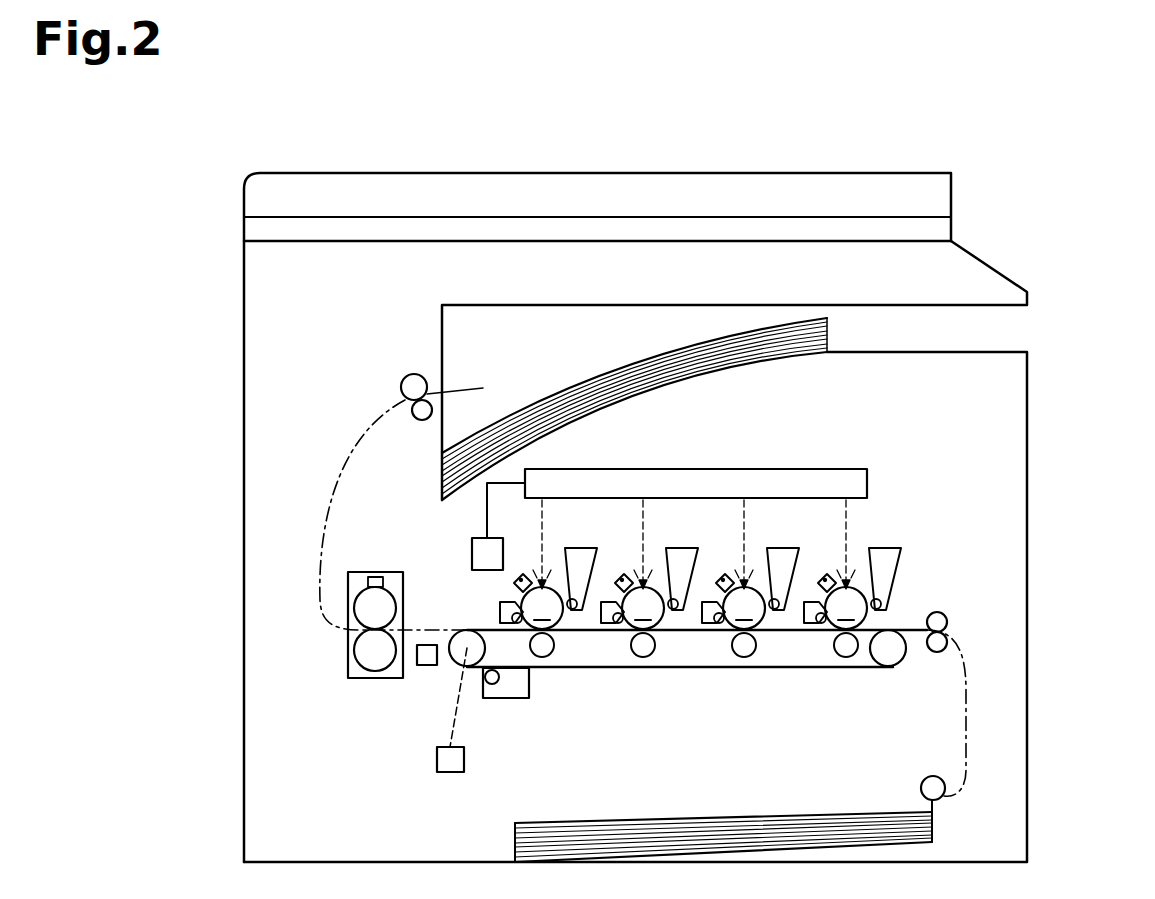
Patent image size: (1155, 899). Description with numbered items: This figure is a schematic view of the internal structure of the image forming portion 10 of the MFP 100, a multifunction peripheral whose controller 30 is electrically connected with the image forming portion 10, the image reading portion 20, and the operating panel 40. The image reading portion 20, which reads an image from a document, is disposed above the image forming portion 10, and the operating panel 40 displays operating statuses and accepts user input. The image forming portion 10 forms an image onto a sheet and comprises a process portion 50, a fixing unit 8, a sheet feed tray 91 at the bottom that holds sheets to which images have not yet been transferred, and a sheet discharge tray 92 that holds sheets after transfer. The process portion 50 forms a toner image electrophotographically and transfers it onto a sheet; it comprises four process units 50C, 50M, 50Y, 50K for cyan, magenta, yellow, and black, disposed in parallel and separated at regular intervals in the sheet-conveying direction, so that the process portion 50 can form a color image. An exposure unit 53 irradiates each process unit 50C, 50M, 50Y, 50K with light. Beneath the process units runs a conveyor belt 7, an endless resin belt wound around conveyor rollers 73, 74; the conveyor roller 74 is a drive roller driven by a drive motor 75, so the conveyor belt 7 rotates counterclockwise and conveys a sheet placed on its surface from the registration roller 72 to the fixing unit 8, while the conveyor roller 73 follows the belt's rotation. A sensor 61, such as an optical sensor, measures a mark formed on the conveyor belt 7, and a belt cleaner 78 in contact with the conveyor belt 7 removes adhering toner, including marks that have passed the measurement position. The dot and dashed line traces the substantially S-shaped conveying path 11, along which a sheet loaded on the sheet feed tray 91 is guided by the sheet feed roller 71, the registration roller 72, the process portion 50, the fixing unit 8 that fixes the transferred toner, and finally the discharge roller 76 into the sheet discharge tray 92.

The MFP 100 is at (974, 152).
The image forming portion 10 is at (980, 411).
The image reading portion 20 is at (250, 200).
The operating panel 40 is at (998, 262).
The sheet discharge tray 92 is at (625, 398).
The sheet feed tray 91 is at (692, 848).
The exposure unit 53 is at (810, 469).
The controller 30 is at (472, 553).
The discharge roller 76 is at (414, 374).
The fixing unit 8 is at (375, 572).
The conveying path 11 is at (970, 700).
The conveyor belt 7 is at (862, 668).
The conveyor roller 74 is at (458, 665).
The conveyor roller 73 is at (888, 660).
The registration roller 72 is at (940, 612).
The sheet feed roller 71 is at (921, 786).
The sensor 61 is at (425, 668).
The belt cleaner 78 is at (496, 700).
The drive motor 75 is at (437, 765).
The process portion 50 is at (847, 744).
The process unit 50C is at (566, 672).
The process unit 50M is at (652, 672).
The process unit 50Y is at (748, 672).
The process unit 50K is at (835, 672).